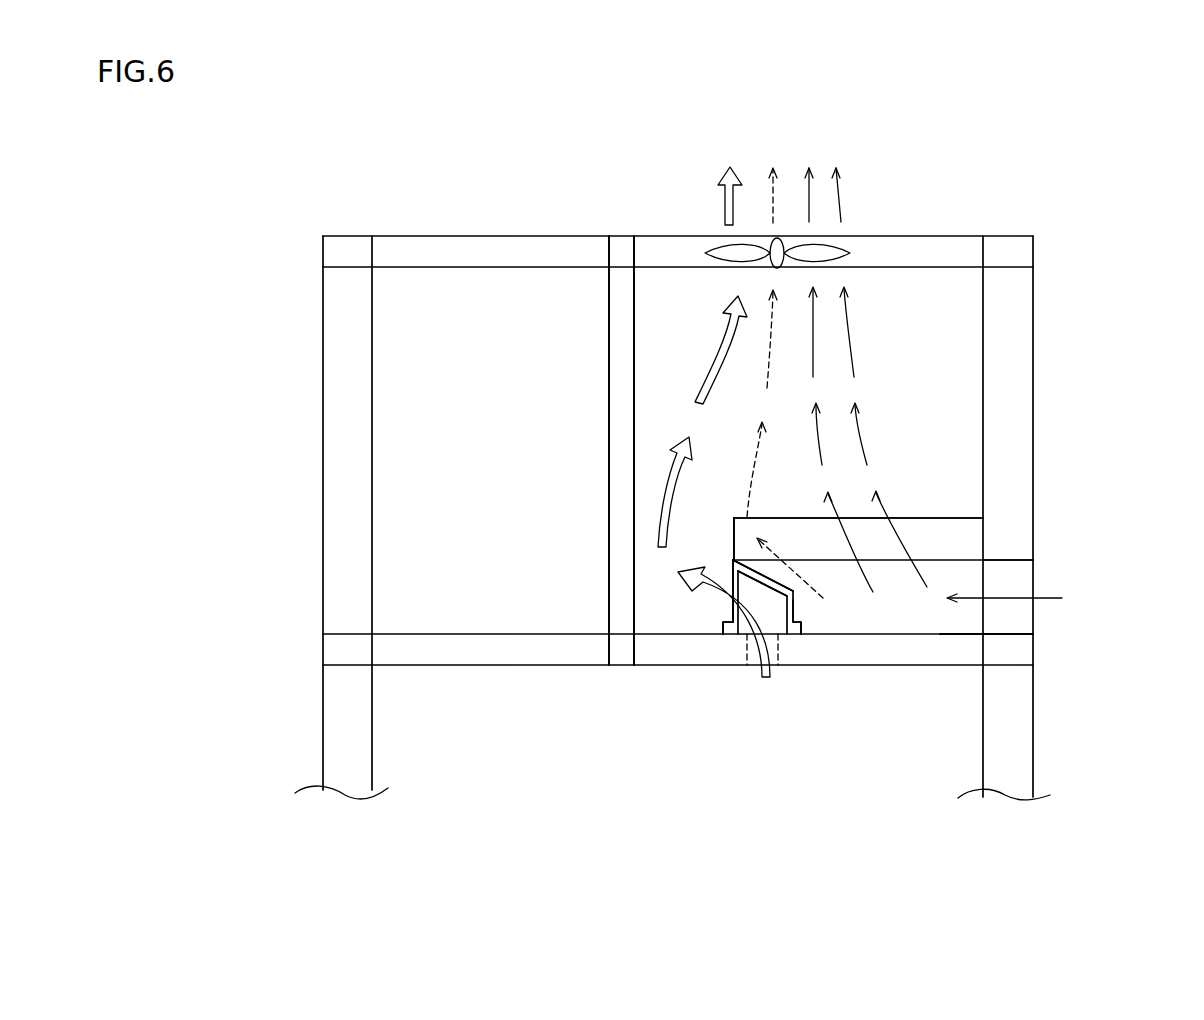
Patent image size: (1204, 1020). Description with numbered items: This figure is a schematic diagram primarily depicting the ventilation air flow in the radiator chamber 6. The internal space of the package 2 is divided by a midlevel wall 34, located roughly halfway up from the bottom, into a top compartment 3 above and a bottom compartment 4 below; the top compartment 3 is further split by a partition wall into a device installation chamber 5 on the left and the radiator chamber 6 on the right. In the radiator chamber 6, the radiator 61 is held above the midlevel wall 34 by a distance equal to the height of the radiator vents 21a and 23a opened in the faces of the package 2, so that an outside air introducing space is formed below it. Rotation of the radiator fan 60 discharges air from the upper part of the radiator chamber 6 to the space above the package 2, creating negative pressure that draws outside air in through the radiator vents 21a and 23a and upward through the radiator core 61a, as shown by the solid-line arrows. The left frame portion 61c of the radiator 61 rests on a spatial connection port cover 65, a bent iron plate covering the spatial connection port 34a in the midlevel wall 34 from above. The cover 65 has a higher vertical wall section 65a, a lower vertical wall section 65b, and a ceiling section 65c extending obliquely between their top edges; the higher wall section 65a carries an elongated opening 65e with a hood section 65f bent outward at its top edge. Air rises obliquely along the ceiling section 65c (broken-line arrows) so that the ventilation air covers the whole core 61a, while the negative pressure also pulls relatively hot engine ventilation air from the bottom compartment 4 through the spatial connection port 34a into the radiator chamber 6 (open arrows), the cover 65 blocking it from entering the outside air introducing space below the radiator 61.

The package 2 is at (1008, 237).
The top compartment 3 is at (572, 152).
The bottom compartment 4 is at (952, 738).
The device installation chamber 5 is at (578, 288).
The radiator chamber 6 is at (667, 287).
The midlevel wall 34 is at (650, 667).
The spatial connection port 34a is at (783, 650).
The radiator fan 60 is at (836, 240).
The radiator 61 is at (950, 517).
The radiator core 61a is at (920, 517).
The left frame portion 61c is at (731, 556).
The spatial connection port cover 65 is at (728, 560).
The vertical wall section 65a is at (720, 622).
The vertical wall section 65b is at (797, 620).
The ceiling section 65c is at (770, 577).
The opening 65e is at (722, 603).
The hood section 65f is at (725, 573).
The radiator vent 23a is at (1007, 562).
The radiator vent 21a is at (953, 637).